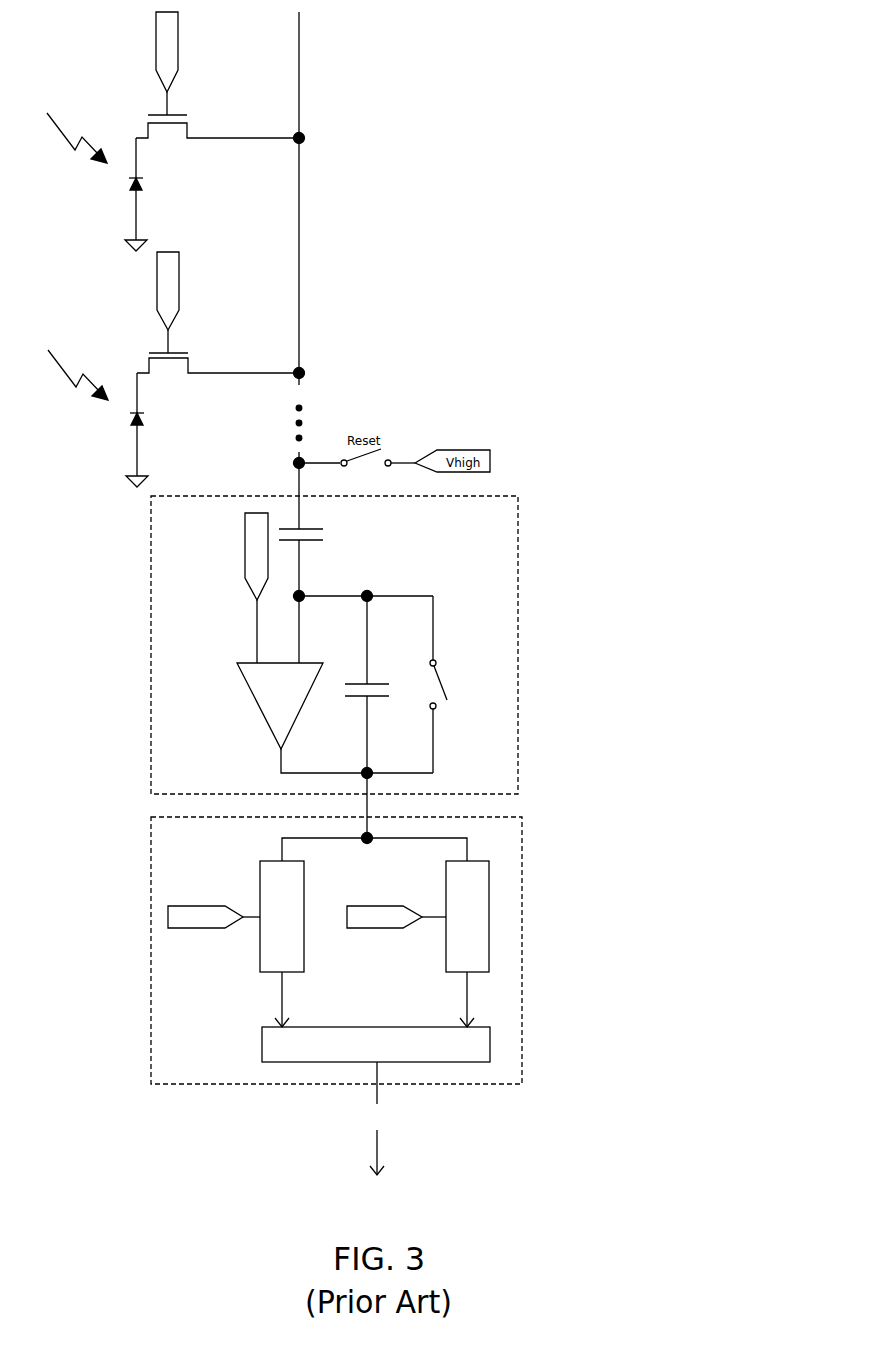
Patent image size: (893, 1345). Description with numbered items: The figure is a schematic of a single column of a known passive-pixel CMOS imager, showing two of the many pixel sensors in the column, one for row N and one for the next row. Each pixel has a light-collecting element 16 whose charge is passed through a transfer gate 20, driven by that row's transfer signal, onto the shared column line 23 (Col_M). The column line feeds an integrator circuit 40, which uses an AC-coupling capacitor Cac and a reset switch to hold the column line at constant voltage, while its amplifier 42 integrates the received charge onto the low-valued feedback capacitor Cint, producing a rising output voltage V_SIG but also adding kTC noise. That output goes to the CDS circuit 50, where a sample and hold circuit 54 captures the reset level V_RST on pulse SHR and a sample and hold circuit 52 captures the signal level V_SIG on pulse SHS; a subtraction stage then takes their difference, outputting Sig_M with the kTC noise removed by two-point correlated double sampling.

The photodiode 16 is at (156, 195).
The transfer gate 20 is at (137, 105).
The column line 23 is at (330, 104).
The integrator 40 is at (374, 645).
The amplifier 42 is at (241, 706).
The CDS circuit 50 is at (375, 974).
The sample and hold circuit 52 is at (490, 880).
The sample and hold circuit 54 is at (243, 885).